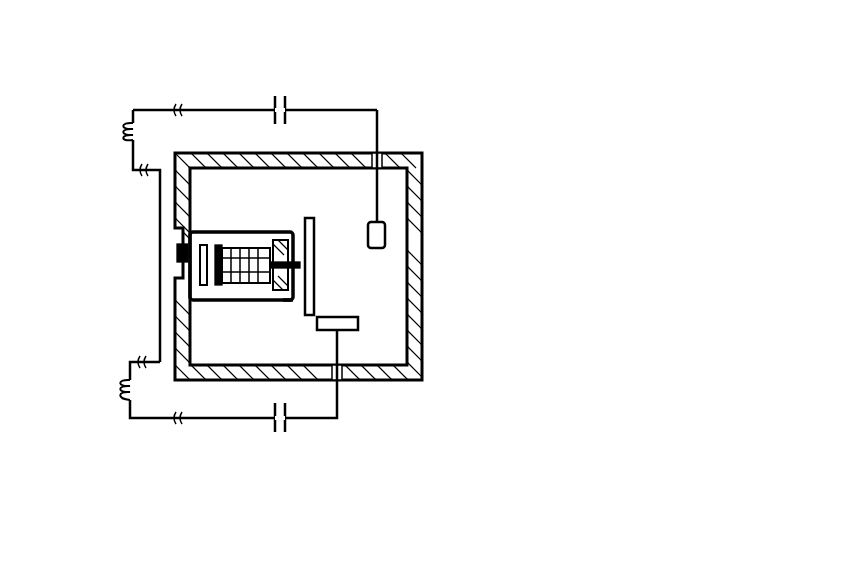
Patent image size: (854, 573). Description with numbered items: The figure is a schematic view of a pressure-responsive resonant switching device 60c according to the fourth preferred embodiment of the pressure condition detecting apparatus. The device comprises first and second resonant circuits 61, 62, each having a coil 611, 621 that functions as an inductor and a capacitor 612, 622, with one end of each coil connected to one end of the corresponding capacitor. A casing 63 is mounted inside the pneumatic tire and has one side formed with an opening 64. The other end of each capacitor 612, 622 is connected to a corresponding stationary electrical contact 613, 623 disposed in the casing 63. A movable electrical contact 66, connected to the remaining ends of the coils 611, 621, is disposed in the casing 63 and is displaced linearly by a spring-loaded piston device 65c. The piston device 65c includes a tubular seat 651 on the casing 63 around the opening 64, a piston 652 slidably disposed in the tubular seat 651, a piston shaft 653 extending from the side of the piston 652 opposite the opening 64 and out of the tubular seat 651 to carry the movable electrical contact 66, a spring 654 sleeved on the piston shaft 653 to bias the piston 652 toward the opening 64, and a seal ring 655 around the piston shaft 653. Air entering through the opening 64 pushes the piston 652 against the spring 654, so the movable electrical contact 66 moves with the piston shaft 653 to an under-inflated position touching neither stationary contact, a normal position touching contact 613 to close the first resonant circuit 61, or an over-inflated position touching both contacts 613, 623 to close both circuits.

The pressure-responsive resonant switching device 60c is at (448, 154).
The first resonant circuit 61 is at (127, 420).
The coil 611 is at (120, 386).
The capacitor 612 is at (280, 433).
The stationary electrical contact 613 is at (340, 317).
The second resonant circuit 62 is at (163, 90).
The coil 621 is at (120, 125).
The capacitor 622 is at (280, 98).
The stationary electrical contact 623 is at (386, 235).
The casing 63 is at (400, 153).
The opening 64 is at (178, 242).
The spring-loaded piston device 65c is at (222, 232).
The tubular seat 651 is at (252, 303).
The piston 652 is at (200, 262).
The piston shaft 653 is at (318, 245).
The spring 654 is at (270, 242).
The seal ring 655 is at (296, 302).
The movable electrical contact 66 is at (316, 272).